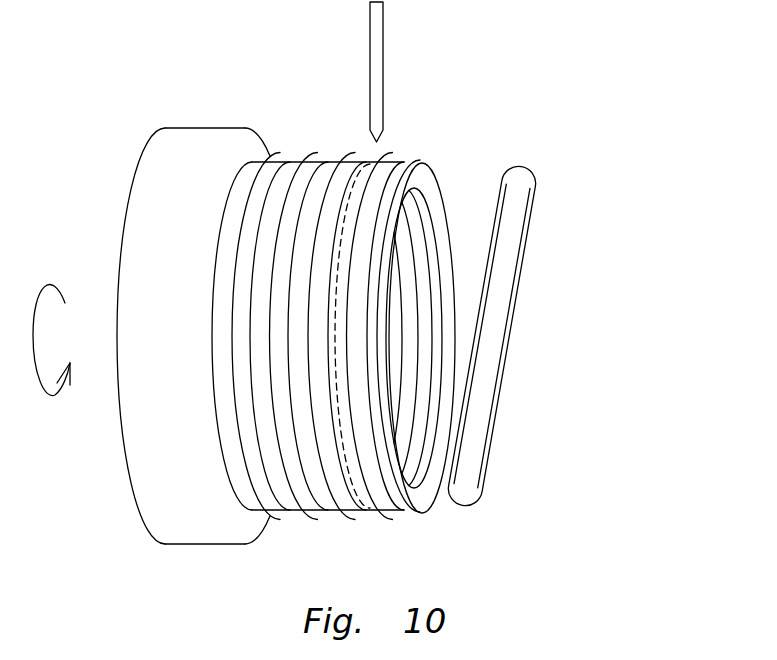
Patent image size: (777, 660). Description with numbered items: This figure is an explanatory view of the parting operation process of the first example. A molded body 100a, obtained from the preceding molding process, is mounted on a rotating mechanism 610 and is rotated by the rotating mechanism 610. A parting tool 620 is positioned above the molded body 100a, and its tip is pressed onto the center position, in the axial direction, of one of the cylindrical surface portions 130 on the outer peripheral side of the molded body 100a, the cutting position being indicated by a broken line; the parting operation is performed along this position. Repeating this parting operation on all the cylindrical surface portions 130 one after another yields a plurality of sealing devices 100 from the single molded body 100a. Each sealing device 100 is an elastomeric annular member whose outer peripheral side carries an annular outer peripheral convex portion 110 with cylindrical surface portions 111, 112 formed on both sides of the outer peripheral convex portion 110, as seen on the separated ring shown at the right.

The sealing device 100 is at (511, 339).
The molded body 100a is at (318, 90).
The outer peripheral convex portion 110 is at (466, 339).
The cylindrical surface portion 111 is at (508, 172).
The cylindrical surface portion 112 is at (540, 178).
The cylindrical surface portions 130 is at (362, 513).
The rotating mechanism 610 is at (184, 141).
The parting tool 620 is at (376, 30).